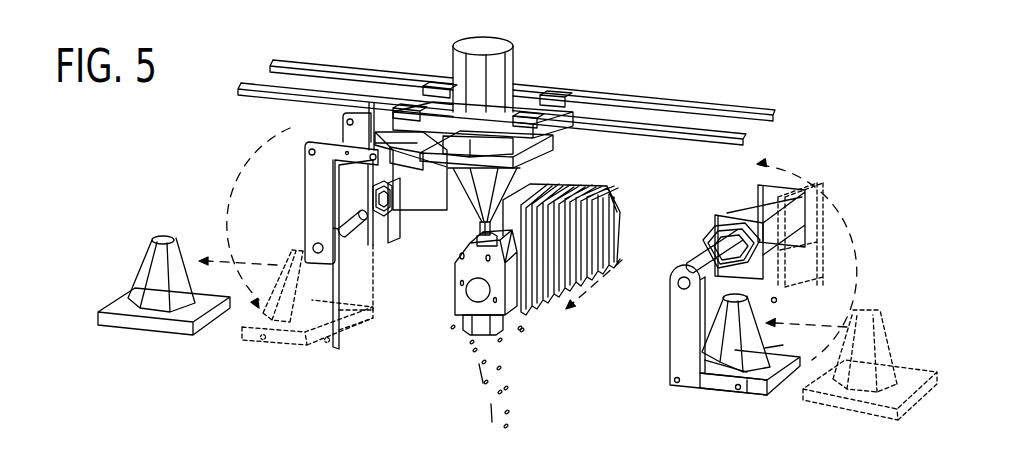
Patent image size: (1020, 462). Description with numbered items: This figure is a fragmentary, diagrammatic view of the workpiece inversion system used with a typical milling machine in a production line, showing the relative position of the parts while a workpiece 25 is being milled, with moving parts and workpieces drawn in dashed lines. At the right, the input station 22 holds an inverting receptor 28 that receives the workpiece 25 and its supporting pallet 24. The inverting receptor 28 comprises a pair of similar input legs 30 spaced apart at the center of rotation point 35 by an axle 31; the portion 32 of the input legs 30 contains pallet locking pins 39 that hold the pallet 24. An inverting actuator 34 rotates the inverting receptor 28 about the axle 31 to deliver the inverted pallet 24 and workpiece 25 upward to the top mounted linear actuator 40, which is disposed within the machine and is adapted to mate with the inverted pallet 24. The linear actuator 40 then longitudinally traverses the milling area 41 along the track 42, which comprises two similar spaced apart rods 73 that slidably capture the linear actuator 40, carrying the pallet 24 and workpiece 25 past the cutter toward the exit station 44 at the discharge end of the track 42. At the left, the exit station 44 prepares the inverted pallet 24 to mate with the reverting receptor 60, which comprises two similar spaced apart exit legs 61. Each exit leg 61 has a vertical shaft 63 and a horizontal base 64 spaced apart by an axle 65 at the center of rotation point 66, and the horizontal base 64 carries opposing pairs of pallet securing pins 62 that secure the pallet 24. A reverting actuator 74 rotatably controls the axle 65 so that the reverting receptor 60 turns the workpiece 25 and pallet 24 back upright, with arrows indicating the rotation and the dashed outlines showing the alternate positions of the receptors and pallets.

The input station 22 is at (844, 261).
The supporting pallet 24 is at (525, 157).
The workpiece 25 is at (502, 183).
The inverting receptor 28 is at (655, 332).
The input legs 30 is at (688, 268).
The axle 31 is at (722, 262).
The portion of legs 32 is at (704, 381).
The inverting actuator 34 is at (783, 186).
The center of rotation point 35 is at (679, 284).
The pallet locking pins 39 is at (675, 382).
The top mounted linear actuator 40 is at (497, 132).
The milling area 41 is at (438, 270).
The track 42 is at (762, 100).
The exit station 44 is at (265, 166).
The reverting receptor 60 is at (290, 199).
The exit legs 61 is at (340, 130).
The pallet securing pins 62 is at (371, 156).
The vertical shaft 63 is at (316, 213).
The horizontal base 64 is at (347, 151).
The axle 65 is at (373, 252).
The center of rotation point 66 is at (318, 262).
The rods 73 is at (637, 120).
The reverting actuator 74 is at (412, 187).